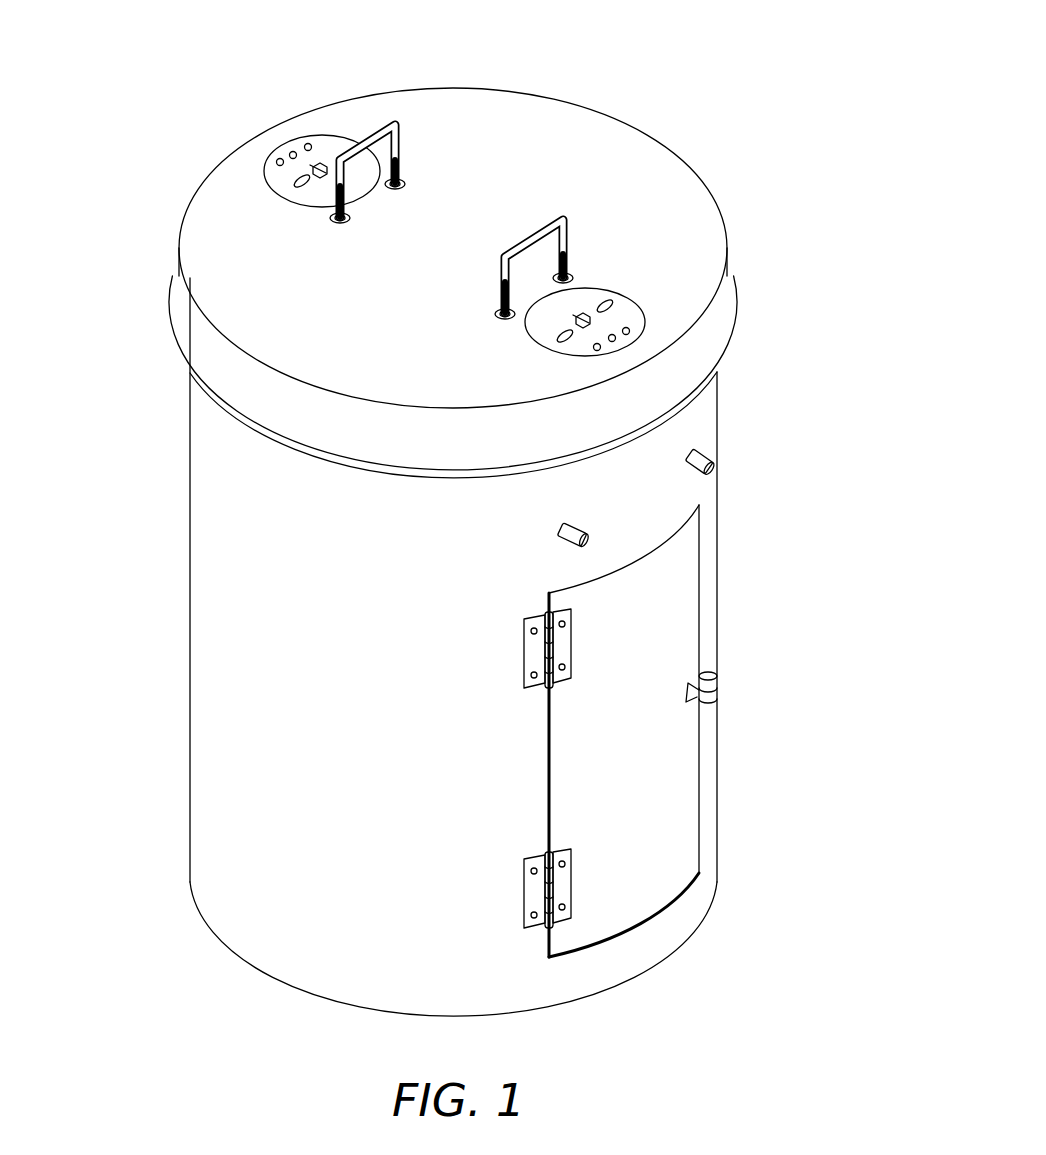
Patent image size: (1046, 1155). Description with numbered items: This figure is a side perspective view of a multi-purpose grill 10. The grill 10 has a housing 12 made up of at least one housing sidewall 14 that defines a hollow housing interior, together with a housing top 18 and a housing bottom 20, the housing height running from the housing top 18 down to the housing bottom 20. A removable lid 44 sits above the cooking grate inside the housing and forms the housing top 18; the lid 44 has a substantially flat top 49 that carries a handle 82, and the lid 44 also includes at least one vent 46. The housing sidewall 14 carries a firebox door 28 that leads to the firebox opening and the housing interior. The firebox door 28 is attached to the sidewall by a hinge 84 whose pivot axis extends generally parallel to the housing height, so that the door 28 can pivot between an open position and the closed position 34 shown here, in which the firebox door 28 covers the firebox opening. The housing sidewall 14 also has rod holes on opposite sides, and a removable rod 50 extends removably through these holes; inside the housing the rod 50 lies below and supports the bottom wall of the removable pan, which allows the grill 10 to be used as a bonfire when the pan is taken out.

The multi-purpose grill 10 is at (215, 77).
The housing 12 is at (220, 663).
The housing sidewall 14 is at (235, 845).
The housing top 18 is at (586, 128).
The housing bottom 20 is at (218, 952).
The firebox door 28 is at (645, 783).
The closed position 34 is at (671, 708).
The removable lid 44 is at (680, 222).
The vent 46 is at (282, 162).
The substantially flat top 49 is at (645, 165).
The removable rod 50 is at (588, 532).
The handle 82 is at (370, 130).
The hinge 84 is at (533, 652).